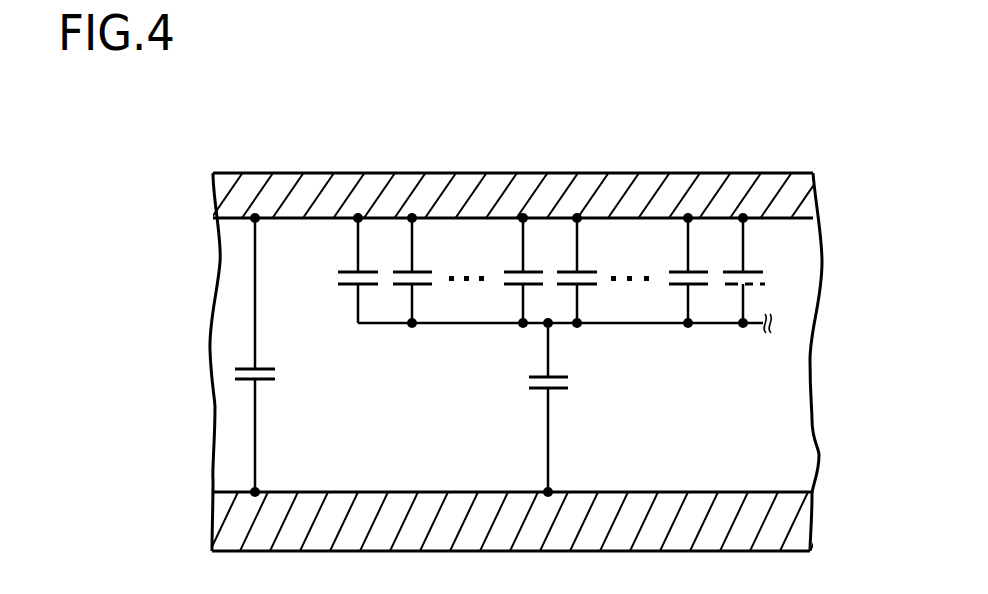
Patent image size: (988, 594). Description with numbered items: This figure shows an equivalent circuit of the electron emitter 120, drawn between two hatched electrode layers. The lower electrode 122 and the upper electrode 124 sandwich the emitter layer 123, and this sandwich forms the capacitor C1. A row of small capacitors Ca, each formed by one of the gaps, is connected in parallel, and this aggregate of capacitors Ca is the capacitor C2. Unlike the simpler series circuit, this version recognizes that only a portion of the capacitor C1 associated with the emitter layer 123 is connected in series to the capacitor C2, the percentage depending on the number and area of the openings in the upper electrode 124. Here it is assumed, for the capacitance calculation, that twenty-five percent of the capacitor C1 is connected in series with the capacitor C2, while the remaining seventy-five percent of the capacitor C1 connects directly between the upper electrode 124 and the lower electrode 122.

The electron emitter 120 is at (893, 116).
The lower electrode 122 is at (793, 531).
The emitter layer 123 is at (800, 351).
The upper electrode 124 is at (324, 183).
The capacitor Ca is at (331, 270).
The capacitor C2 is at (528, 294).
The capacitor C1 is at (276, 373).